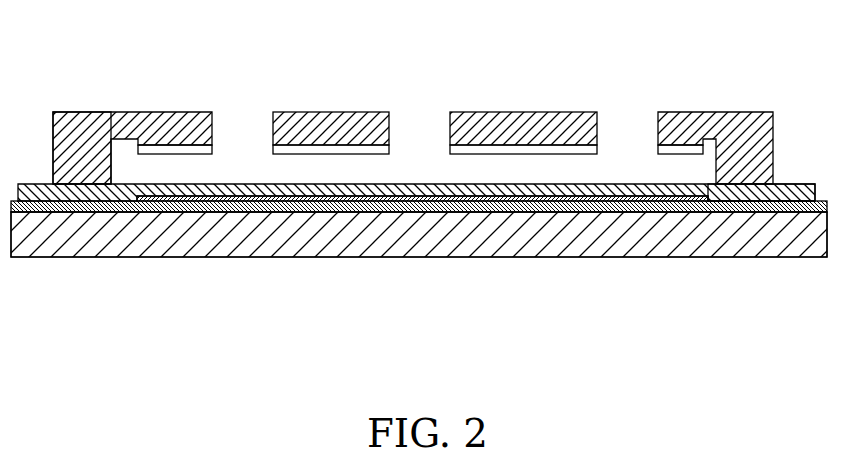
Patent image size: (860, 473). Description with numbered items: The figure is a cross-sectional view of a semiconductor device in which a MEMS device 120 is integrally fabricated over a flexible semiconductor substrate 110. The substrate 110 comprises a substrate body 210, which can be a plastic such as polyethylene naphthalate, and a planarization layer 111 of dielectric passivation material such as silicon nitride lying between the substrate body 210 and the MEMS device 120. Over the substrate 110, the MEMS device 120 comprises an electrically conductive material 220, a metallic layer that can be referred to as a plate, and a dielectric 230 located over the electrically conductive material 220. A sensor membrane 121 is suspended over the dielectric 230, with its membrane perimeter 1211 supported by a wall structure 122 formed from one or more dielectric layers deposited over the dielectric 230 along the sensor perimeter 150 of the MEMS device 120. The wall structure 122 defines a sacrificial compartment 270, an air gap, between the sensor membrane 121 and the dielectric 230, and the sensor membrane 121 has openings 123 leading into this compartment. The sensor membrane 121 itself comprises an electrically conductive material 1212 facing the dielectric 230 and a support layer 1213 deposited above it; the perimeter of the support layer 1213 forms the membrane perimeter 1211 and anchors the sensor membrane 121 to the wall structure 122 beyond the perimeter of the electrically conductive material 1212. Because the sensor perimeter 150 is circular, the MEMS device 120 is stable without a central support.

The flexible semiconductor substrate 110 is at (550, 243).
The planarization layer 111 is at (34, 207).
The MEMS device 120 is at (114, 100).
The sensor membrane 121 is at (580, 110).
The wall structure 122 is at (72, 144).
The openings 123 is at (238, 116).
The sensor perimeter 150 is at (783, 180).
The substrate body 210 is at (433, 244).
The electrically conductive material 220 is at (516, 197).
The dielectric 230 is at (678, 182).
The sacrificial compartment 270 is at (407, 100).
The membrane perimeter 1211 is at (760, 110).
The electrically conductive material 1212 is at (151, 150).
The support layer 1213 is at (372, 110).